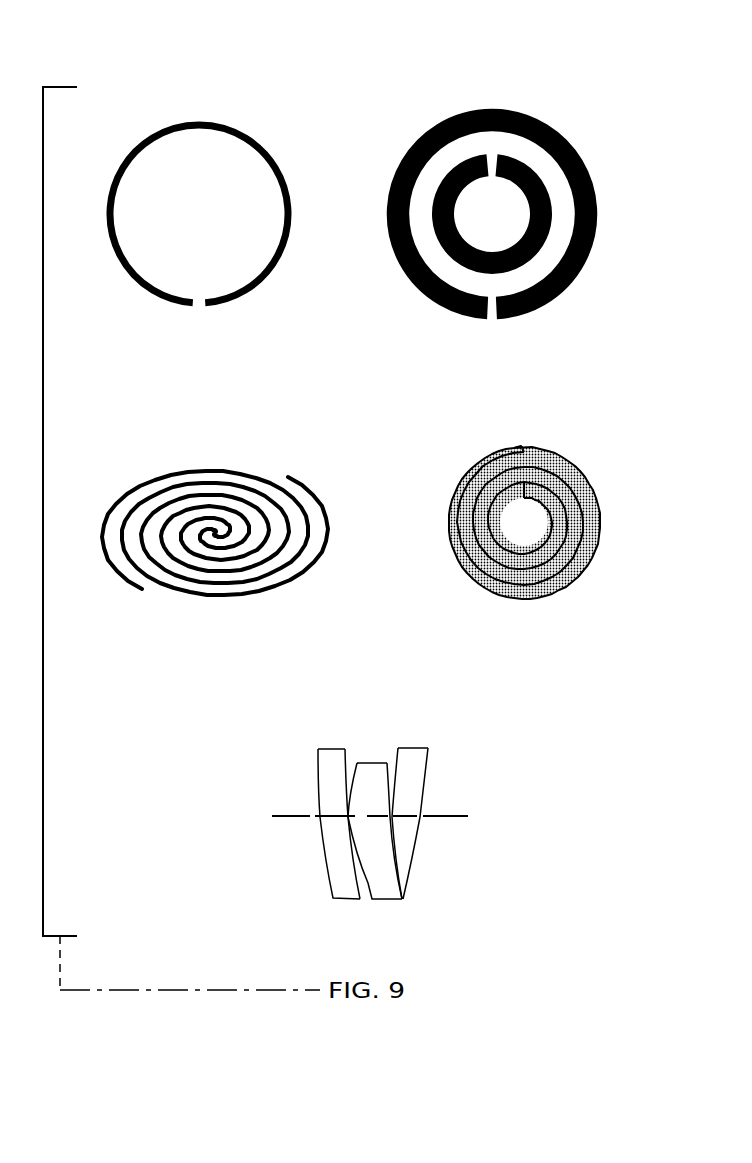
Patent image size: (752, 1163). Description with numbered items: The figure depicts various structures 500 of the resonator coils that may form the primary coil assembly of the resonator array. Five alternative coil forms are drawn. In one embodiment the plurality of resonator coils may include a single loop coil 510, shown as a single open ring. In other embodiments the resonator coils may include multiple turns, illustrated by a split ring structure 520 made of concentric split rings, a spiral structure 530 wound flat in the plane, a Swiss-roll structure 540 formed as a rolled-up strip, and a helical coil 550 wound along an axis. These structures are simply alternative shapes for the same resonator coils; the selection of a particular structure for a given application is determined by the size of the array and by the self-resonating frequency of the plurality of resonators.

The structures of the resonator coils 500 is at (560, 44).
The single loop coil 510 is at (244, 130).
The split ring structure 520 is at (558, 129).
The spiral structure 530 is at (299, 472).
The Swiss-roll structure 540 is at (582, 452).
The helical coil 550 is at (435, 731).